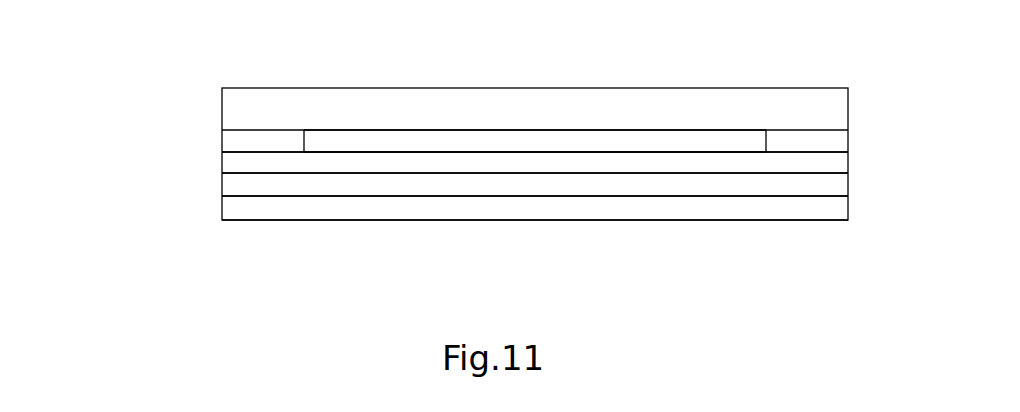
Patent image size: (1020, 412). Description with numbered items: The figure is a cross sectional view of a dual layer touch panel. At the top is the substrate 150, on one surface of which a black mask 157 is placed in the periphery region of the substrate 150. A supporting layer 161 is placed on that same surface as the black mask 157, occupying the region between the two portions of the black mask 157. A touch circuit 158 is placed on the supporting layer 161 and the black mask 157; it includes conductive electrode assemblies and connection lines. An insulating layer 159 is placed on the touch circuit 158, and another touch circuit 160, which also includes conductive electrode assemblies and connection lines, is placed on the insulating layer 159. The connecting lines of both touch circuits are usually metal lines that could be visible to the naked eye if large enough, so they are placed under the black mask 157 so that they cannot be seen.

The substrate 150 is at (809, 107).
The black mask 157 is at (826, 140).
The touch circuit 158 is at (834, 161).
The insulating layer 159 is at (832, 185).
The touch circuit 160 is at (832, 207).
The supporting layer 161 is at (352, 141).